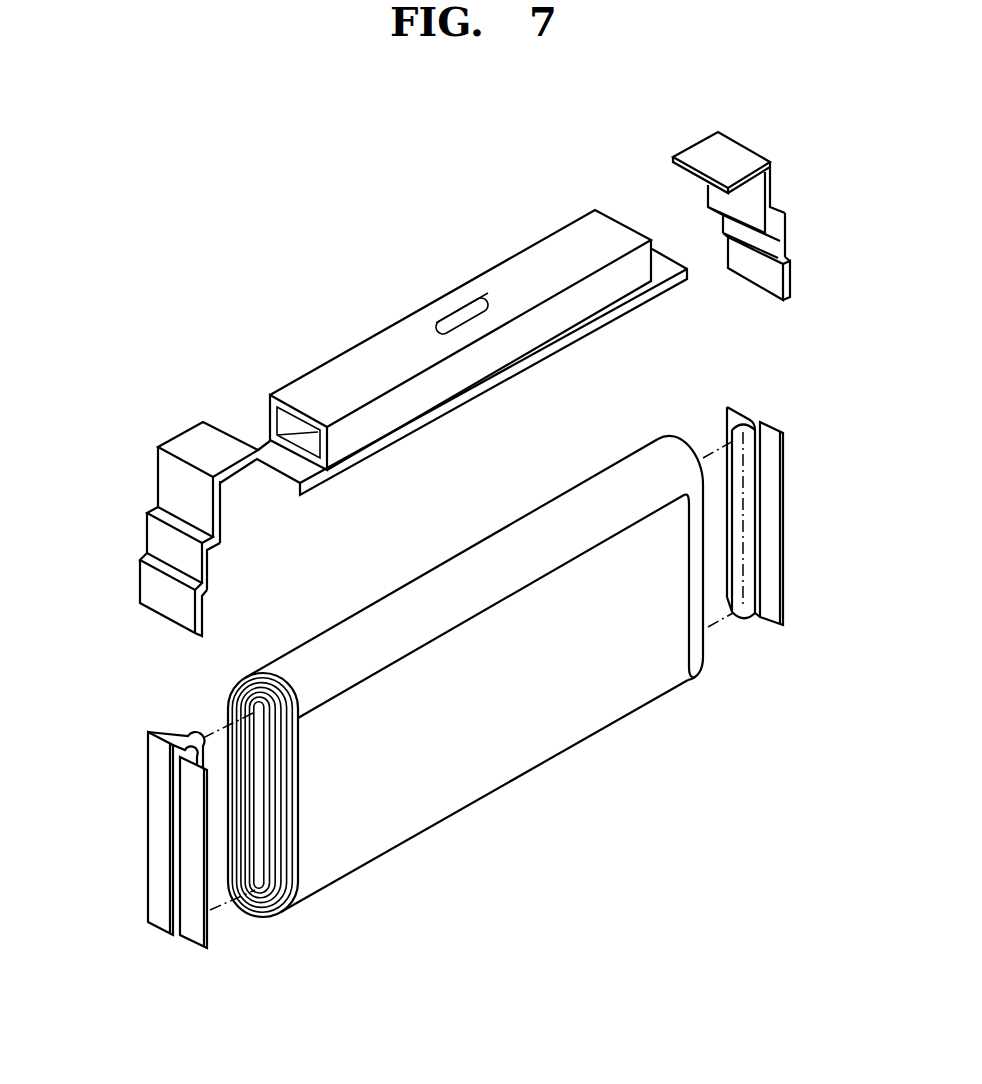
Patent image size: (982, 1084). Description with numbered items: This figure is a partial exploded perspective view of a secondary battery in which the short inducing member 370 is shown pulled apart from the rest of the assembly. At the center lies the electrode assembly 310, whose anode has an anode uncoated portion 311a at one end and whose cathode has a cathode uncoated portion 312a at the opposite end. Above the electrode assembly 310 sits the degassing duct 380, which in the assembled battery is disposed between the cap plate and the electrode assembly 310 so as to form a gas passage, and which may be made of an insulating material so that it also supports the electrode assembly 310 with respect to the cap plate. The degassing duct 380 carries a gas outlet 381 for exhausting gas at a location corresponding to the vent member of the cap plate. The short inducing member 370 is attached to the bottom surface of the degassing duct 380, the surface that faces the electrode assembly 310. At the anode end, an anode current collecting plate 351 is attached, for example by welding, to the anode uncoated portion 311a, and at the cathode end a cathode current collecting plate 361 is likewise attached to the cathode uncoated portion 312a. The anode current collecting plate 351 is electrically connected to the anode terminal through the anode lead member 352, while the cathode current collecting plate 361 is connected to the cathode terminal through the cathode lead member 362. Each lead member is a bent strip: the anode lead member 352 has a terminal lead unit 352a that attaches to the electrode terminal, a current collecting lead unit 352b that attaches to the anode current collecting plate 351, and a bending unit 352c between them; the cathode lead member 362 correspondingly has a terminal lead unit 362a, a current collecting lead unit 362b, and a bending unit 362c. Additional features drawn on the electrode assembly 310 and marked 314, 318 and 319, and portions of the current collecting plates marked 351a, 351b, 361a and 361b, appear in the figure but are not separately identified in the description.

The electrode assembly 310 is at (486, 707).
The anode uncoated portion 311a is at (290, 883).
The cathode uncoated portion 312a is at (710, 668).
The electrode assembly (jelly roll) 314 is at (253, 892).
The cell front surface 318 is at (465, 765).
The cell bottom edge 319 is at (385, 860).
The anode current collecting plate 351 is at (136, 806).
The first clip outer plate 351a is at (155, 868).
The first clip bent portion 351b is at (197, 735).
The anode lead member 352 is at (162, 499).
The terminal lead unit 352a is at (190, 440).
The current collecting lead unit 352b is at (158, 538).
The bending unit 352c is at (163, 518).
The cathode current collecting plate 361 is at (781, 493).
The third clip outer plate 361a is at (782, 578).
The third clip bent portion 361b is at (740, 424).
The cathode lead member 362 is at (740, 186).
The terminal lead unit 362a is at (710, 150).
The current collecting lead unit 362b is at (784, 238).
The bending unit 362c is at (777, 210).
The short inducing member 370 is at (397, 435).
The degassing duct 380 is at (460, 340).
The gas outlet 381 is at (463, 317).